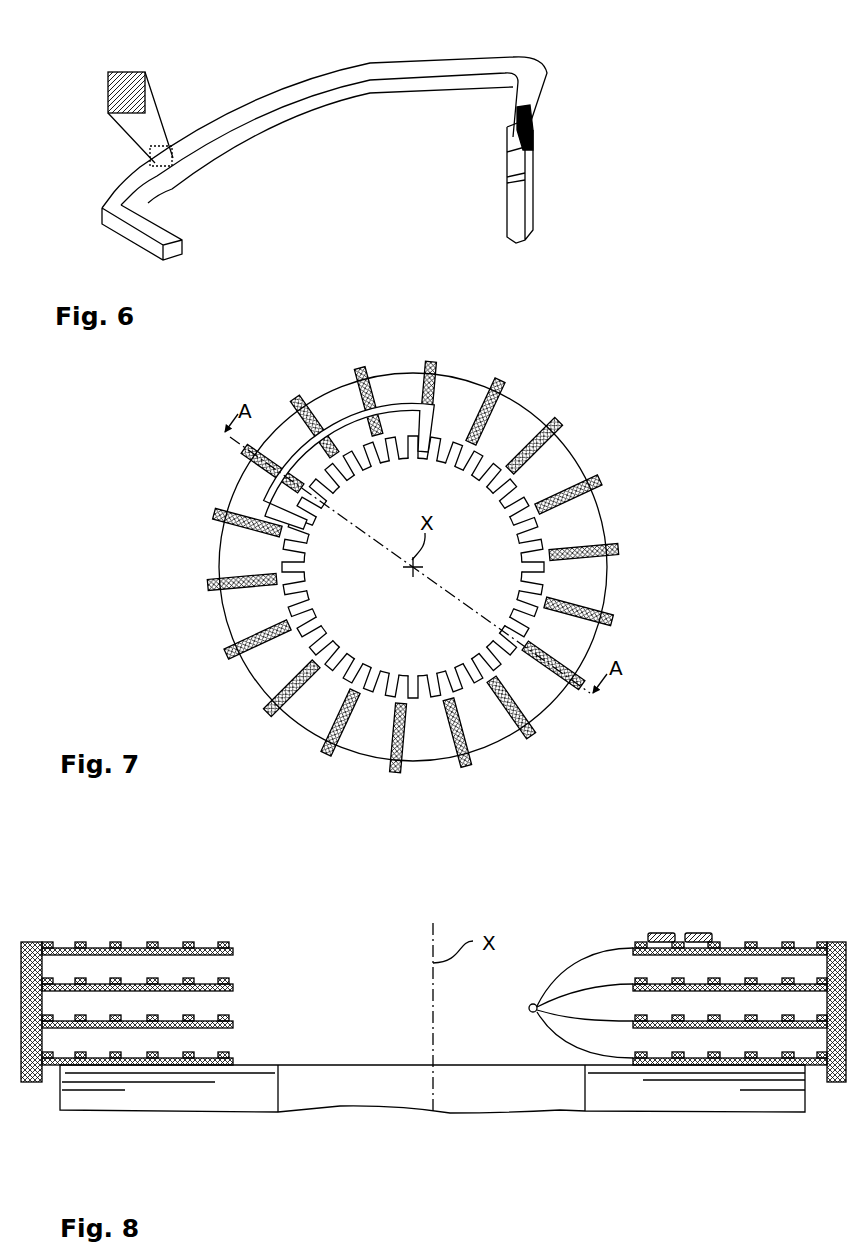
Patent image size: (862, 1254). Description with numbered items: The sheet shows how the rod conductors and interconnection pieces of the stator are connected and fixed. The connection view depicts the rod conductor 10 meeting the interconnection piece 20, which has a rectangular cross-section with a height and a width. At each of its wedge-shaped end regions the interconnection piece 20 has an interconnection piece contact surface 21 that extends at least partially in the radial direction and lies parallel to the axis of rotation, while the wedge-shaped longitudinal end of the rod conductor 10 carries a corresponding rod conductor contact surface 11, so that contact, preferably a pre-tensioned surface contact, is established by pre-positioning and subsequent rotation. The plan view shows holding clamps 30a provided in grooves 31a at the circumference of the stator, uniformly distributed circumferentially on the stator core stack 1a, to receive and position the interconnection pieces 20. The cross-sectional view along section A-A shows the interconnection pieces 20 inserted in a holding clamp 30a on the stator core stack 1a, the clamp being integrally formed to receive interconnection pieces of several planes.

In FIG. 7, the stator core stack 1a is at (580, 522).
In FIG. 8, the stator core stack 1a is at (705, 1095).
In FIG. 6, the rod conductor 10 is at (533, 210).
In FIG. 6, the rod conductor contact surface 11 is at (511, 142).
In FIG. 6, the interconnection piece 20 is at (297, 82).
In FIG. 7, the interconnection piece 20 is at (386, 404).
In FIG. 8, the interconnection piece 20 is at (698, 933).
In FIG. 6, the interconnection piece contact surface 21 is at (174, 248).
In FIG. 7, the holding clamp 30a is at (208, 578).
In FIG. 8, the holding clamp 30a is at (30, 942).
In FIG. 7, the groove 31a is at (255, 535).
In FIG. 8, the groove 31a is at (168, 940).